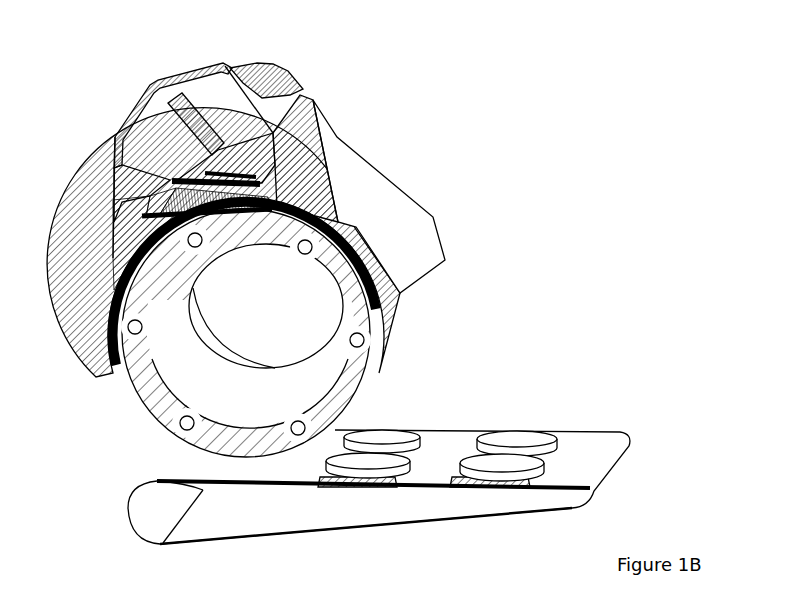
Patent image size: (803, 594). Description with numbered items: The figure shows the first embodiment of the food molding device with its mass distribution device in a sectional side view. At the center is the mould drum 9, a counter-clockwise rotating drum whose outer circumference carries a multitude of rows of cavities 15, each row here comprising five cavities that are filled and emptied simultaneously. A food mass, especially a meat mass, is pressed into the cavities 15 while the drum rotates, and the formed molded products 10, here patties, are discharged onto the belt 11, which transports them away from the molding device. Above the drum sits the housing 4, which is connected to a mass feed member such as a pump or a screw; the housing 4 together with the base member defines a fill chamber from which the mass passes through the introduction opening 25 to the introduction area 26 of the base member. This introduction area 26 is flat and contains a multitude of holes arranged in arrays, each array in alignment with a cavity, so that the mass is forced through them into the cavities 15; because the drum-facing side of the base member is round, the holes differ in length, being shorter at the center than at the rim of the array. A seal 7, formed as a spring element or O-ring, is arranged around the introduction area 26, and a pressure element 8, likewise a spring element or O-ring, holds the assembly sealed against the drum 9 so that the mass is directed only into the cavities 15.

The housing 4 is at (170, 180).
The introduction opening 25 is at (218, 148).
The introduction area of the base member 26 is at (172, 178).
The seal around introduction area 7 is at (280, 208).
The mould drum 9 is at (338, 222).
The pressure element 8 is at (378, 262).
The cavity 15 is at (380, 310).
The discharge belt 11 is at (450, 440).
The molded product 10 is at (525, 432).